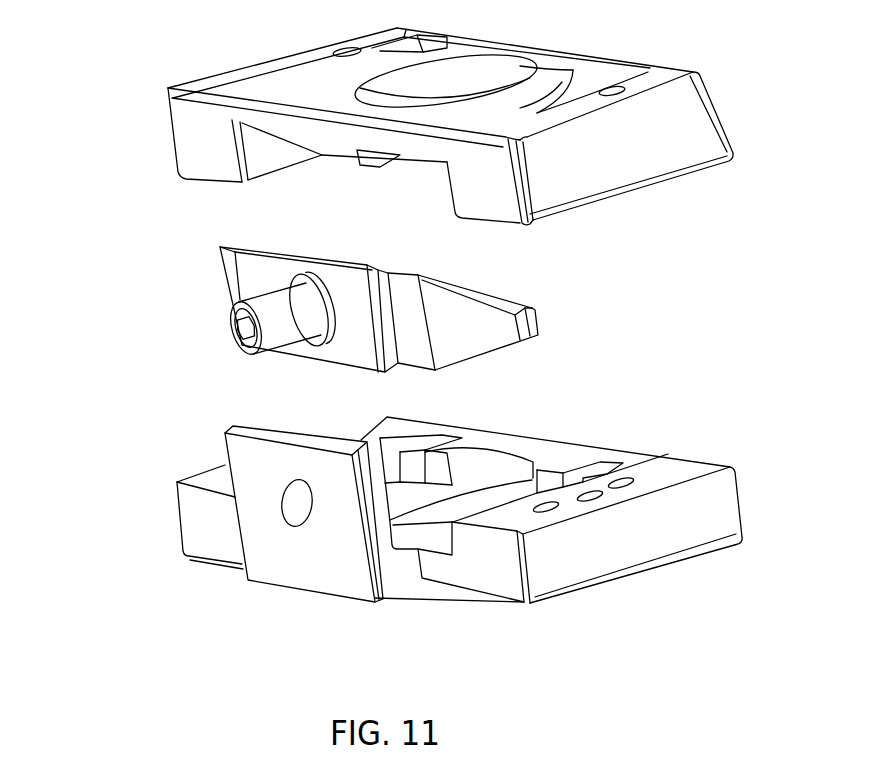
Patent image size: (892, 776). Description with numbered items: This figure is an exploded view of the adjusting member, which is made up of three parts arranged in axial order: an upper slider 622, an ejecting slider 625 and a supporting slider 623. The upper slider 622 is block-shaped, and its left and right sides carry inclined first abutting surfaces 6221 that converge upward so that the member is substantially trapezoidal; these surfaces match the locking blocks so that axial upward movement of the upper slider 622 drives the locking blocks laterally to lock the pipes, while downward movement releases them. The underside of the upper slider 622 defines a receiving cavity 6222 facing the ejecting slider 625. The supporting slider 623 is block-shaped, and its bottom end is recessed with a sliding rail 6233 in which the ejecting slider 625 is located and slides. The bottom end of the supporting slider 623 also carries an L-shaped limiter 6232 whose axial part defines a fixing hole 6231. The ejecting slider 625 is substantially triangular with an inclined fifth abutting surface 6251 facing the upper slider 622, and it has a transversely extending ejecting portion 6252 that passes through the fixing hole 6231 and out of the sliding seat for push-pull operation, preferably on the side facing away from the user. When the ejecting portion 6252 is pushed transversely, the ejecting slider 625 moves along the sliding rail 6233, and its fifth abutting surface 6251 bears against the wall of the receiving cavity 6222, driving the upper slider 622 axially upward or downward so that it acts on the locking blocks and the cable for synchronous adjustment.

The upper slider 622 is at (168, 118).
The first abutting surface 6221 is at (695, 121).
The receiving cavity 6222 is at (325, 145).
The ejecting slider 625 is at (227, 277).
The fifth abutting surface 6251 is at (450, 286).
The ejecting portion 6252 is at (232, 341).
The supporting slider 623 is at (193, 527).
The fixing hole 6231 is at (295, 495).
The limiter 6232 is at (307, 573).
The sliding rail 6233 is at (497, 483).